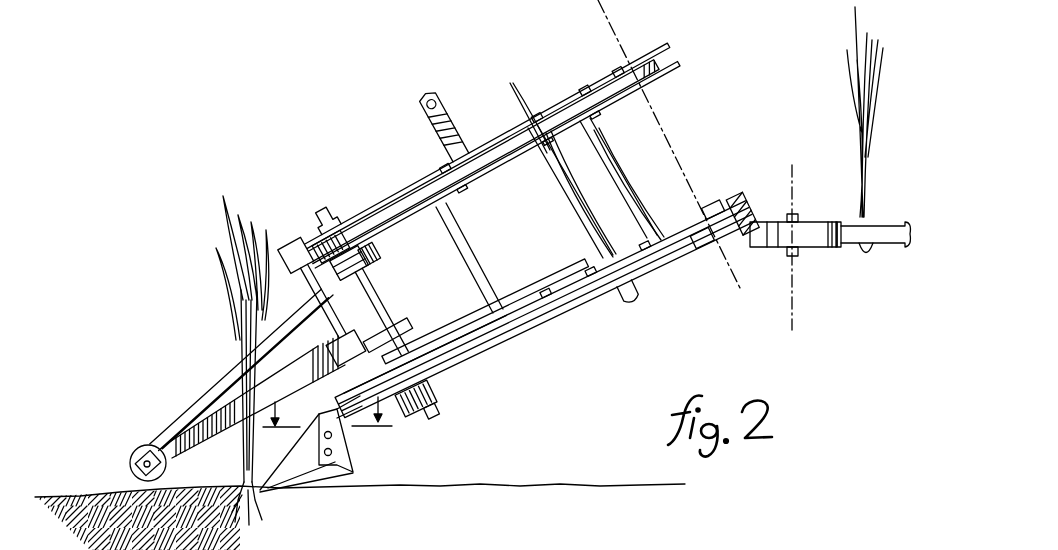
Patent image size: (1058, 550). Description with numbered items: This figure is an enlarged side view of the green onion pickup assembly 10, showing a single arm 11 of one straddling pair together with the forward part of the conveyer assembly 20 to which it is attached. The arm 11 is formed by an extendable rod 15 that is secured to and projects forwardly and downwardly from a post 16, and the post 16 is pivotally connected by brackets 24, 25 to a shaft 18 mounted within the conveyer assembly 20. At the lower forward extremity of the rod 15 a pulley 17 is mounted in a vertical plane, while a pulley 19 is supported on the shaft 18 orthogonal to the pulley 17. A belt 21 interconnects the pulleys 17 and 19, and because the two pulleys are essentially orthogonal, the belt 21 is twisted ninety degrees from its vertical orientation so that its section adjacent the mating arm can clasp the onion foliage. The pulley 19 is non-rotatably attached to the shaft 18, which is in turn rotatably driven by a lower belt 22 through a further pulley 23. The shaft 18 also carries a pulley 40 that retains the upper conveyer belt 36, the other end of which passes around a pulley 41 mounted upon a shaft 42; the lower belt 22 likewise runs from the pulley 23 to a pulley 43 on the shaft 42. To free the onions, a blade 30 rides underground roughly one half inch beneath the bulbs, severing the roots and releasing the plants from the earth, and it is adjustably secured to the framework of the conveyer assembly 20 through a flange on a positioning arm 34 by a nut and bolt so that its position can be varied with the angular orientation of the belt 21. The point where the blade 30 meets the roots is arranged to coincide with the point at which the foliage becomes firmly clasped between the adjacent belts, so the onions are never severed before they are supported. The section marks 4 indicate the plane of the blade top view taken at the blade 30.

The section line 4- 4 is at (327, 422).
The pickup assembly 10 is at (175, 388).
The arm 11 is at (217, 437).
The extendable rod 15 is at (307, 383).
The post 16 is at (297, 270).
The pulley 17 is at (132, 458).
The shaft 18 is at (378, 292).
The pulley 19 is at (380, 258).
The conveyer assembly 20 is at (543, 331).
The belt 21 is at (228, 372).
The belt 22 is at (503, 358).
The pulley 23 is at (447, 390).
The bracket 24 is at (377, 328).
The bracket 25 is at (306, 237).
The blade 30 is at (352, 468).
The positioning arm 34 is at (417, 356).
The belt 36 is at (405, 197).
The pulley 40 is at (355, 228).
The pulley 41 is at (647, 52).
The shaft 42 is at (708, 200).
The pulley 43 is at (753, 214).